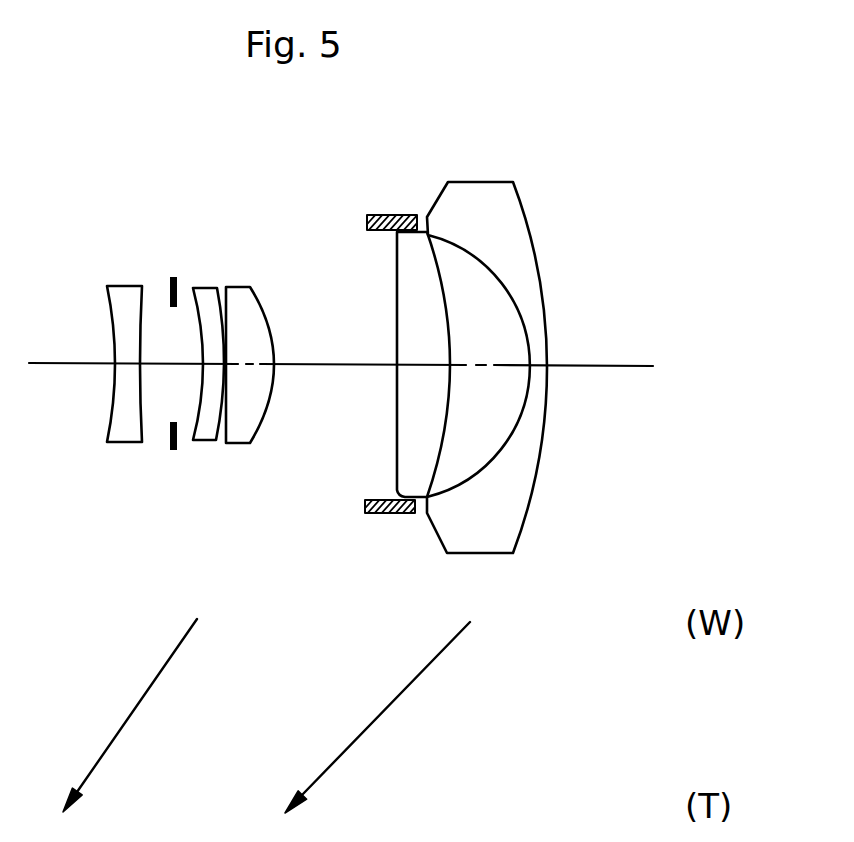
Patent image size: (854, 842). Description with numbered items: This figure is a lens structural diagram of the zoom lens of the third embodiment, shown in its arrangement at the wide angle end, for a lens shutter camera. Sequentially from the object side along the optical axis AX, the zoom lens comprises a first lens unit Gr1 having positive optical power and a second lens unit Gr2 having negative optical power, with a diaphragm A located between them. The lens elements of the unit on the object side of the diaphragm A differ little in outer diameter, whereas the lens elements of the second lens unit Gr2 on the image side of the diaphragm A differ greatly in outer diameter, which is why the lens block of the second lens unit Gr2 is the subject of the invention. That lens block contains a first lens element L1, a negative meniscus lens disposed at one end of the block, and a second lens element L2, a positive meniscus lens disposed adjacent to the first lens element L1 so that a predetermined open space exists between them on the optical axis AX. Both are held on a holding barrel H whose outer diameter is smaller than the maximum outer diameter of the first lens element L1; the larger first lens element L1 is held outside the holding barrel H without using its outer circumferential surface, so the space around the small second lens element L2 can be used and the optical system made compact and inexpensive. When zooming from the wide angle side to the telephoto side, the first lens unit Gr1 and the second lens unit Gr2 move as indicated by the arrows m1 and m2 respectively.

The optical axis AX is at (635, 367).
The first lens unit Gr1 is at (197, 427).
The second lens unit Gr2 is at (426, 381).
The diaphragm A is at (172, 287).
The first lens element L1 is at (483, 192).
The second lens element L2 is at (407, 254).
The holding barrel H is at (377, 214).
The arrow indicating movement of the first lens unit m1 is at (117, 737).
The arrow indicating movement of the second lens unit m2 is at (363, 735).